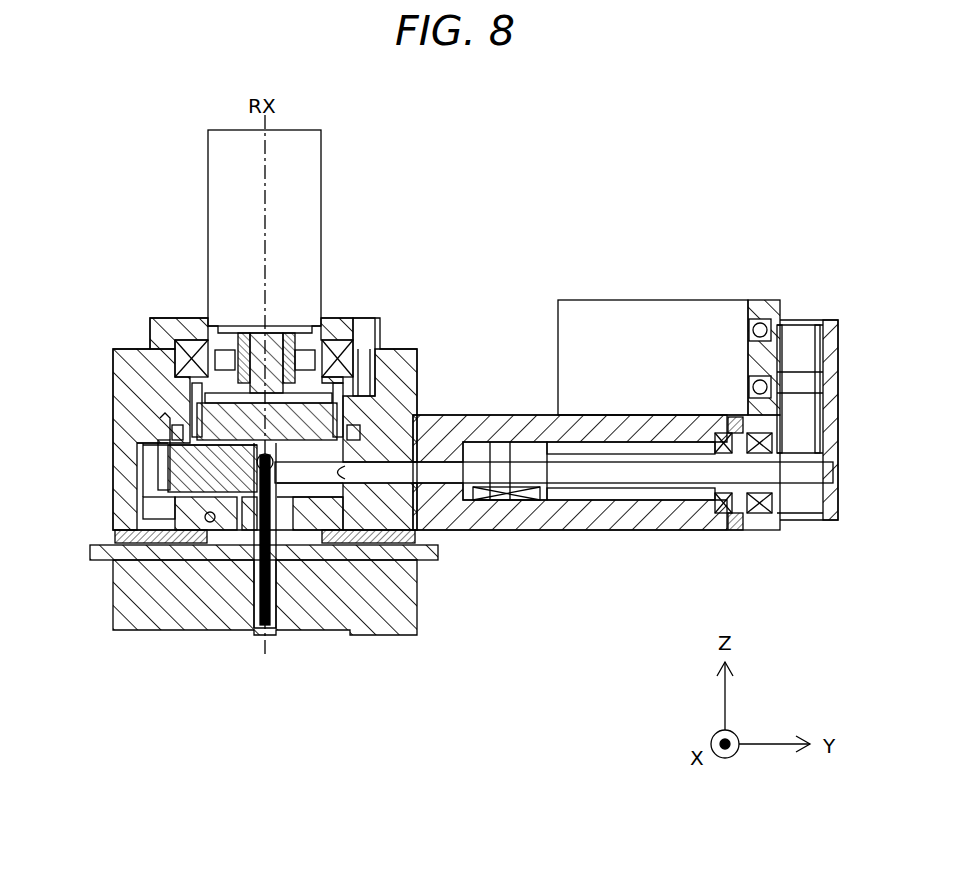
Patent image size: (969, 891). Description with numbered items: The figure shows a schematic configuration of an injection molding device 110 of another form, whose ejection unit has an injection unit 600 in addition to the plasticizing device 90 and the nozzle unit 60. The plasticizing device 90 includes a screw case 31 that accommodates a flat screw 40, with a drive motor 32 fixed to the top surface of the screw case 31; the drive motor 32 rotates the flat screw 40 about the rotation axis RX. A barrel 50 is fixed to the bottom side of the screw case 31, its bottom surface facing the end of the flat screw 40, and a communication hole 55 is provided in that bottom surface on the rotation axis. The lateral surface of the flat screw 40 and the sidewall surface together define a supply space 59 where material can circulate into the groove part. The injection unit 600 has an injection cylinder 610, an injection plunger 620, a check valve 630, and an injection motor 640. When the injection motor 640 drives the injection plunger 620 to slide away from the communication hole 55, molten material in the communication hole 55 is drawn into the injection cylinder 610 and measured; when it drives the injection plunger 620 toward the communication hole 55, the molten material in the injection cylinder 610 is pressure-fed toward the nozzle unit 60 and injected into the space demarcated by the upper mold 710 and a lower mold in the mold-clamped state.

The screw case 31 is at (132, 347).
The drive motor 32 is at (305, 160).
The flat screw 40 is at (205, 412).
The barrel 50 is at (185, 466).
The communication hole 55 is at (185, 436).
The supply space 59 is at (340, 407).
The nozzle unit 60 is at (280, 638).
The plasticizing device 90 is at (390, 212).
The injection molding device 110 is at (742, 122).
The injection unit 600 is at (517, 583).
The injection cylinder 610 is at (333, 480).
The injection plunger 620 is at (420, 472).
The check valve 630 is at (378, 335).
The injection motor 640 is at (650, 300).
The upper mold 710 is at (150, 592).